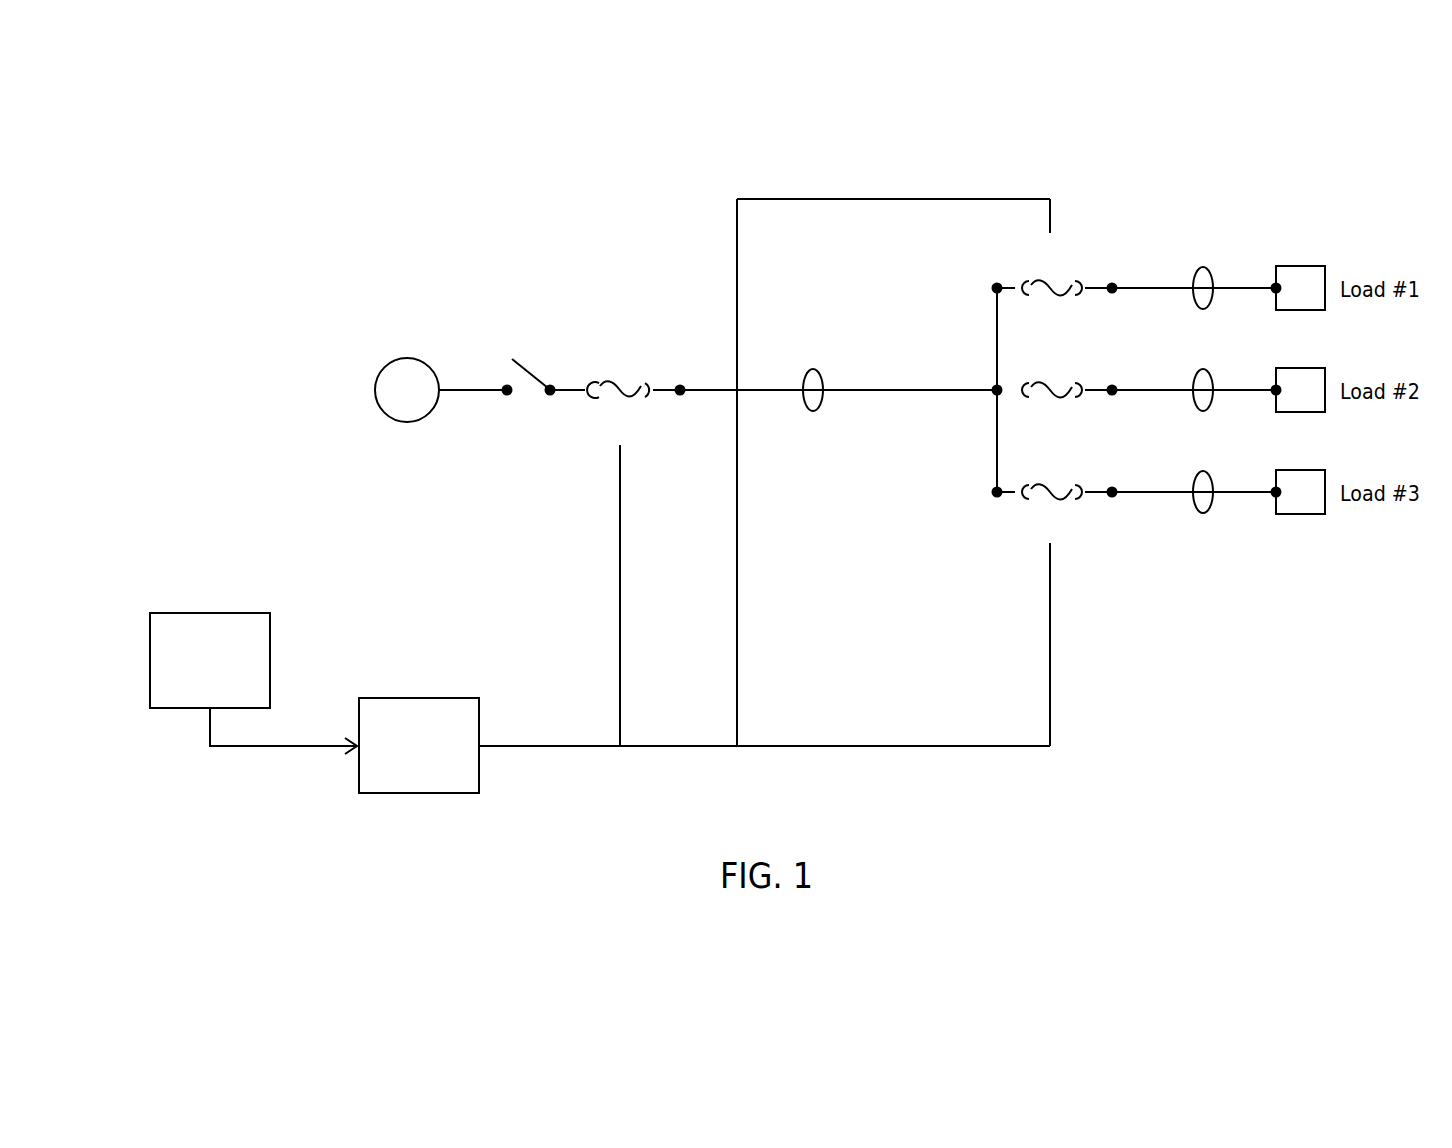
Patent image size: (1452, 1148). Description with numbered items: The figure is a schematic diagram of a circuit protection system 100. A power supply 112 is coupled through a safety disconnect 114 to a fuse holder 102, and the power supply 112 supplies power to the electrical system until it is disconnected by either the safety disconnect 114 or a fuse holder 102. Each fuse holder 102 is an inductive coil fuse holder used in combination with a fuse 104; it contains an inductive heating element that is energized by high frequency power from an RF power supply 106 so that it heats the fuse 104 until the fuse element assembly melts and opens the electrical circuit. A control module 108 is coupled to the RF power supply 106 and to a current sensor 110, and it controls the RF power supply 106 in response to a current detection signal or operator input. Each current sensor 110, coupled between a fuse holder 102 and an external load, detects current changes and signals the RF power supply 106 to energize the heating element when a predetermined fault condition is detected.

The circuit protection system 100 is at (1106, 164).
The fuse holder 102 is at (618, 355).
The fuse 104 is at (623, 382).
The RF power supply 106 is at (466, 698).
The control module 108 is at (257, 613).
The current sensor 110 is at (821, 362).
The power supply 112 is at (405, 357).
The safety disconnect 114 is at (504, 369).